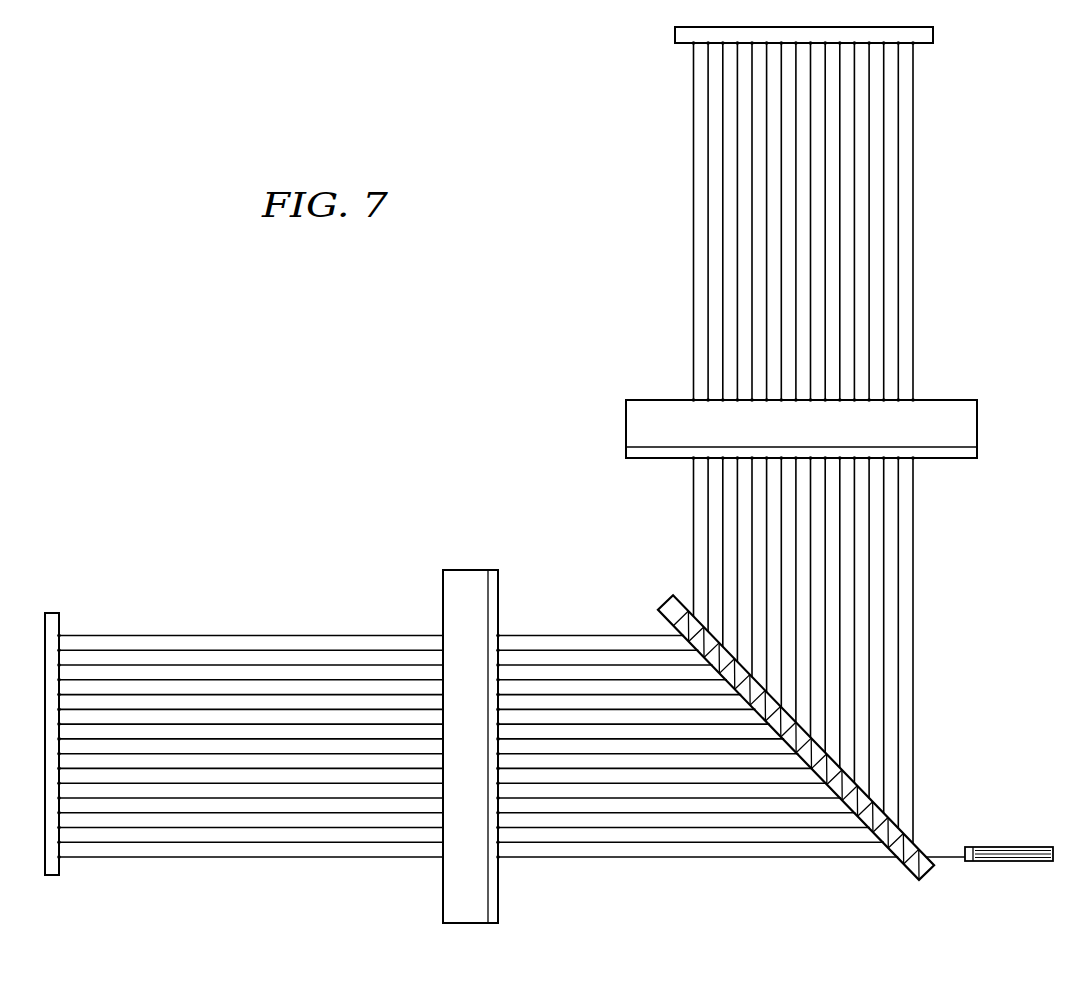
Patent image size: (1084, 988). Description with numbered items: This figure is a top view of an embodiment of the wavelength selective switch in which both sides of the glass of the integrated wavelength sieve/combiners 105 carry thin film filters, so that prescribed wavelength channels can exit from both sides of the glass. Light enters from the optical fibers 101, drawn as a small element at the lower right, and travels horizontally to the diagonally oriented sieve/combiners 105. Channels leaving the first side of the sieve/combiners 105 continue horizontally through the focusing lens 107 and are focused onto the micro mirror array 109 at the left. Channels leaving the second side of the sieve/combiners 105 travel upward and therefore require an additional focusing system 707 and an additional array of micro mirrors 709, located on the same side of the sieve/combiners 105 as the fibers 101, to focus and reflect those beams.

The optical fibers 101 is at (1012, 847).
The integrated wavelength sieve/combiner 105 is at (661, 601).
The focusing lens 107 is at (480, 570).
The micro mirror array 109 is at (59, 613).
The additional focusing system 707 is at (977, 430).
The additional array of micro mirrors 709 is at (933, 35).